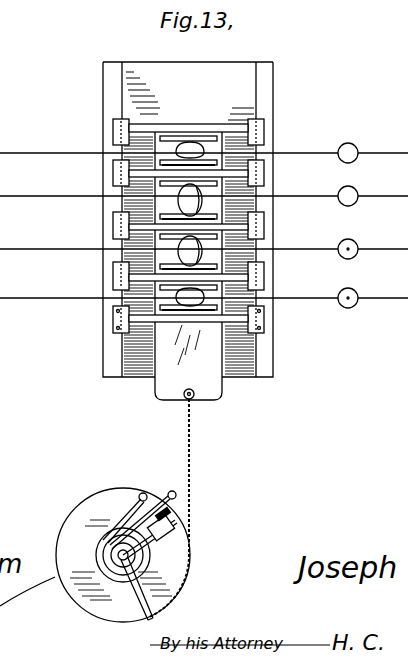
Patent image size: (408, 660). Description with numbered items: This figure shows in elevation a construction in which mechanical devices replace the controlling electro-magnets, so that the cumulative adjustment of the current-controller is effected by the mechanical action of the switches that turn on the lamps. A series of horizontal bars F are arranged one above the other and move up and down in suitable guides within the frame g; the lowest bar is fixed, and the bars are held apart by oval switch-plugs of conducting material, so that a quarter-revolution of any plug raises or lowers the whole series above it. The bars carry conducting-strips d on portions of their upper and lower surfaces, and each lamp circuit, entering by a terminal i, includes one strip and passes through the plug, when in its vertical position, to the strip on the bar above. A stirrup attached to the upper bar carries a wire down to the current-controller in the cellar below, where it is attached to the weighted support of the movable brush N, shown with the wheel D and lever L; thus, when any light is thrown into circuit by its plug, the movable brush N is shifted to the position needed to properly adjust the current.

The horizontal bar F is at (156, 131).
The conducting-strip d is at (174, 143).
The frame standard g is at (188, 231).
The terminal / wire i is at (204, 225).
The wheel D is at (100, 568).
The lever L is at (170, 495).
The movable brush N is at (116, 515).